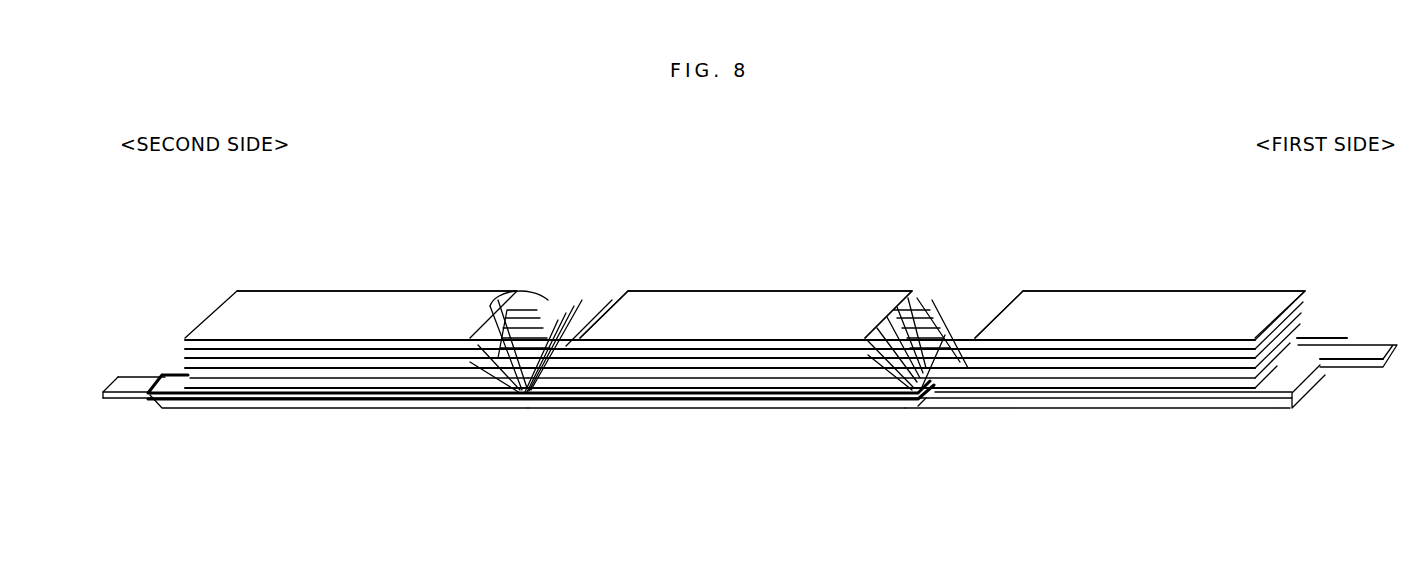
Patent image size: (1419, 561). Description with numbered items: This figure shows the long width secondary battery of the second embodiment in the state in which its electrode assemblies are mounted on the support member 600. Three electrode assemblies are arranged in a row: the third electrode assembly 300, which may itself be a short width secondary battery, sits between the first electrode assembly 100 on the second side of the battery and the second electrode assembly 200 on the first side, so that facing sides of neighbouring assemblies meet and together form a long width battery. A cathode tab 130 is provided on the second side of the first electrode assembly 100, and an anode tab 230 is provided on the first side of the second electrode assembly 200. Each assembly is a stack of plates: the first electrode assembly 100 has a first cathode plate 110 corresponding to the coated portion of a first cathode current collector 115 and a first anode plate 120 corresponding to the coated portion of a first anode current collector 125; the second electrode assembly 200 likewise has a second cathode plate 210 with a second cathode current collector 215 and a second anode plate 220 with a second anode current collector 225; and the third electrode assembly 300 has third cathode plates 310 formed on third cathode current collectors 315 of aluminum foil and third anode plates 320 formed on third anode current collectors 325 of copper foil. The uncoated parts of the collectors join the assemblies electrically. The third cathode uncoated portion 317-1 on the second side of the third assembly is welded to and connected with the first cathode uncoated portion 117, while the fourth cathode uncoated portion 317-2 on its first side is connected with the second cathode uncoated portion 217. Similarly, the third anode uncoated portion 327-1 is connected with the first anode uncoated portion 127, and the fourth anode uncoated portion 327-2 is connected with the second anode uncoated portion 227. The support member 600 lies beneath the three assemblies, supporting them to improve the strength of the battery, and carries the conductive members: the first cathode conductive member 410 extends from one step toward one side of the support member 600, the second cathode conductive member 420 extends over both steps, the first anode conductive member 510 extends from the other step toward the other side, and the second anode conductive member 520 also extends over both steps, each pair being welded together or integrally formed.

The first electrode assembly 100 is at (478, 242).
The first cathode plate 110 is at (293, 289).
The first cathode current collector 115 is at (376, 290).
The first cathode uncoated portion 117 is at (488, 392).
The first anode plate 120 is at (267, 400).
The first anode current collector 125 is at (330, 400).
The first anode uncoated portion 127 is at (523, 291).
The cathode tab 130 is at (128, 388).
The second electrode assembly 200 is at (1208, 242).
The second cathode plate 210 is at (1050, 288).
The second cathode current collector 215 is at (1128, 290).
The second cathode uncoated portion 217 is at (957, 400).
The second anode plate 220 is at (1133, 399).
The second anode current collector 225 is at (1200, 400).
The second anode uncoated portion 227 is at (995, 291).
The anode tab 230 is at (1356, 368).
The third electrode assembly 300 is at (838, 242).
The third cathode plate 310 is at (677, 288).
The third cathode current collector 315 is at (757, 290).
The third cathode uncoated portion 317-1 is at (566, 398).
The fourth cathode uncoated portion 317-2 is at (876, 400).
The third anode plate 320 is at (658, 400).
The third anode current collector 325 is at (718, 400).
The third anode uncoated portion 327-1 is at (607, 291).
The fourth anode uncoated portion 327-2 is at (912, 291).
The first cathode conductive member 410 is at (522, 400).
The second cathode conductive member 420 is at (823, 400).
The first anode conductive member 510 is at (1322, 343).
The second anode conductive member 520 is at (560, 335).
The support member 600 is at (1030, 403).